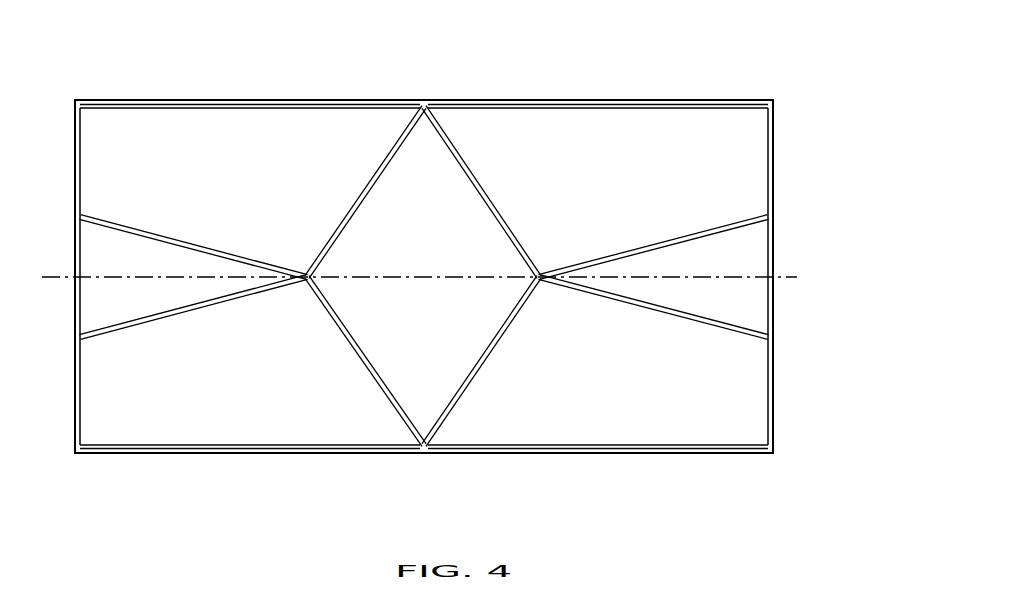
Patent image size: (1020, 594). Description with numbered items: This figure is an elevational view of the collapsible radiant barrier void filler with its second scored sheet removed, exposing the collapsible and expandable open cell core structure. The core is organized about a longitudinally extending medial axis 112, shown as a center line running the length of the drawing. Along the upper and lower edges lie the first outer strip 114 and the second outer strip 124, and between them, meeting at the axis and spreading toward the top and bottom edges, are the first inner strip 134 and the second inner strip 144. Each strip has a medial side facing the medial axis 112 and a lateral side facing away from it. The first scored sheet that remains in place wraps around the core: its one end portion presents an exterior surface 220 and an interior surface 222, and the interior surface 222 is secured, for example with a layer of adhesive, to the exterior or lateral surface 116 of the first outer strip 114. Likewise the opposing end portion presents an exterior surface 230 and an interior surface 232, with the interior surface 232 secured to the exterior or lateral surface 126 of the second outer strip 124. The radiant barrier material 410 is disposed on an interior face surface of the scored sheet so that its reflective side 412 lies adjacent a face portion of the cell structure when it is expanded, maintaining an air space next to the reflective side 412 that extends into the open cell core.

The radiant barrier material 410 is at (148, 178).
The reflective side 412 is at (614, 177).
The medial axis 112 is at (50, 278).
The first outer strip 114 is at (507, 103).
The lateral surface of the first outer strip 116 is at (433, 50).
The second outer strip 124 is at (568, 451).
The lateral surface of the second outer strip 126 is at (160, 517).
The first inner strip 134 is at (493, 198).
The second inner strip 144 is at (567, 288).
The exterior surface of first end portion 220 is at (192, 99).
The interior surface of first end portion 222 is at (266, 69).
The exterior surface of second end portion 230 is at (131, 450).
The interior surface of second end portion 232 is at (250, 493).